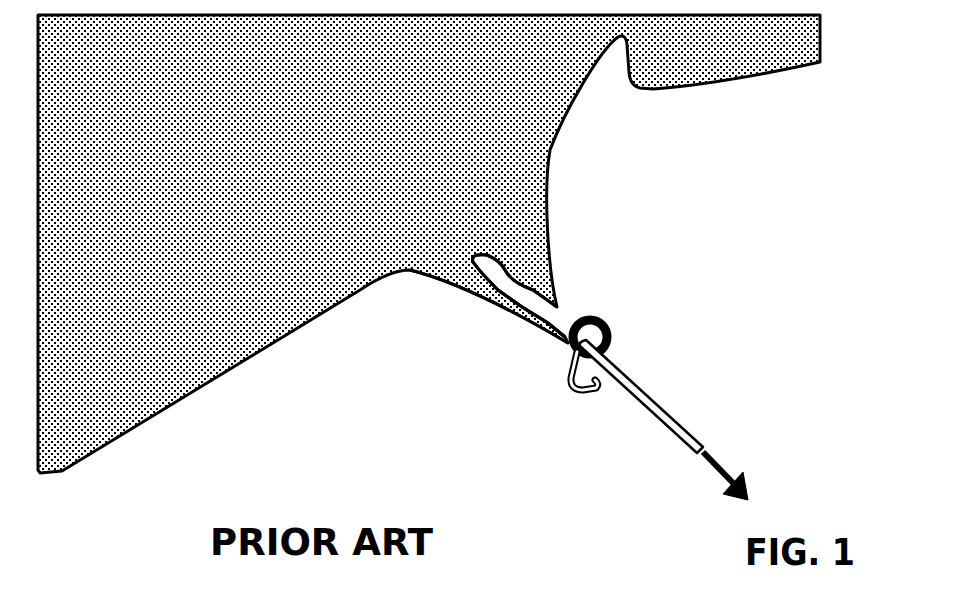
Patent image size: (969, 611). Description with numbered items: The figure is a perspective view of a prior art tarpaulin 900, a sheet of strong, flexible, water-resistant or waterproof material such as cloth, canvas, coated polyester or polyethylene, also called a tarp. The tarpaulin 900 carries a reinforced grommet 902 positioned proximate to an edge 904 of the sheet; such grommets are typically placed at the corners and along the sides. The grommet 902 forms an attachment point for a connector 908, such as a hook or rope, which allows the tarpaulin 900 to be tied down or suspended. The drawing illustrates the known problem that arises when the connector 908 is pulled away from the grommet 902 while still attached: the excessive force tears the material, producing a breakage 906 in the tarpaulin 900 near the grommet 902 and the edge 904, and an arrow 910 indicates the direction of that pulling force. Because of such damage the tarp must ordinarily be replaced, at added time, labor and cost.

The tarpaulin 900 is at (342, 153).
The grommet 902 is at (568, 355).
The edge 904 is at (456, 288).
The breakage 906 is at (543, 317).
The connector 908 is at (678, 415).
The direction arrow 910 is at (722, 460).